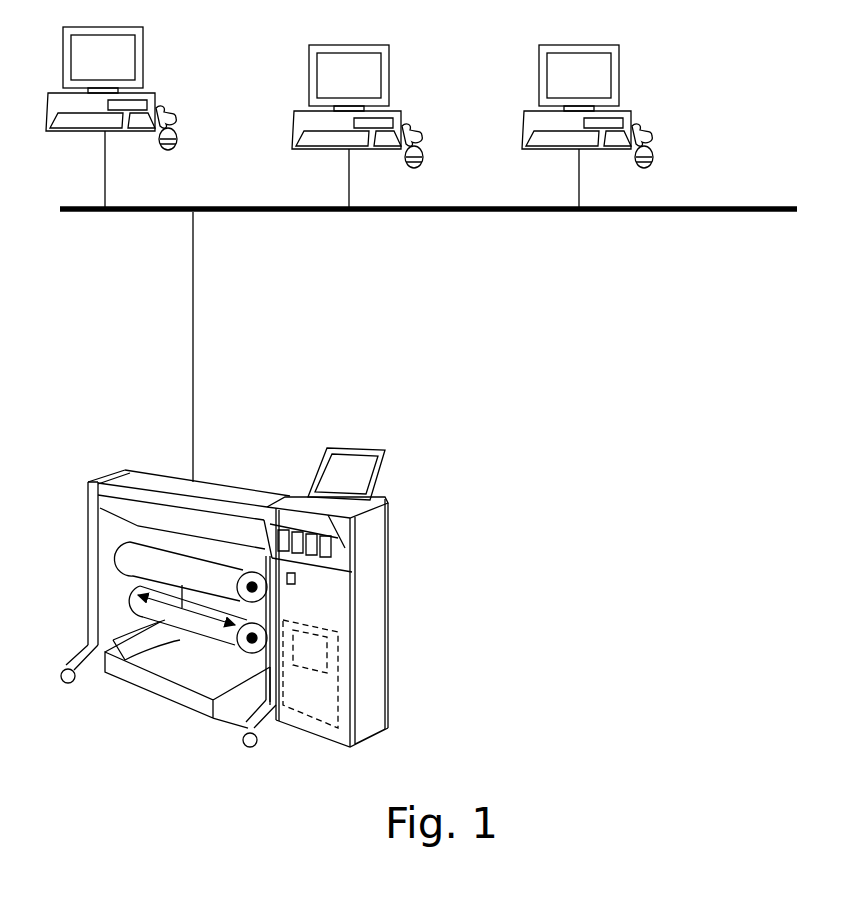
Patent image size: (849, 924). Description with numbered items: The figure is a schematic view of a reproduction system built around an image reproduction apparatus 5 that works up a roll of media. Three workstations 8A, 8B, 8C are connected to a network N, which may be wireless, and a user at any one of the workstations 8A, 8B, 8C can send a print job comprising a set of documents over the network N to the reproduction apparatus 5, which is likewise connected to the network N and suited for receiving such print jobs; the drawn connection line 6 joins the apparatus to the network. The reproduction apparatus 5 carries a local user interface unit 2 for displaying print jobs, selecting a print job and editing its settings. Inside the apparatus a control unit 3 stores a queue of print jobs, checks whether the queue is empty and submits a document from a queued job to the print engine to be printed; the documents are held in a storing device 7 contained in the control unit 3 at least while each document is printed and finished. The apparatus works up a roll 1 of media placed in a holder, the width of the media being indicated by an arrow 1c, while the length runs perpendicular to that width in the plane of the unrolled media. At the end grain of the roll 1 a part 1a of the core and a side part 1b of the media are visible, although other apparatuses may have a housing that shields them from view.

The workstation 8A is at (154, 98).
The workstation 8B is at (400, 116).
The workstation 8C is at (630, 116).
The network N is at (797, 214).
The network cable 6 is at (193, 343).
The reproduction apparatus 5 is at (408, 591).
The local user interface unit 2 is at (322, 460).
The roll of media 1 is at (200, 632).
The part of the core of the roll 1a is at (247, 650).
The side part of the media 1b is at (238, 675).
The arrow indicating width 1c is at (184, 586).
The control unit 3 is at (318, 705).
The storing device 7 is at (312, 642).